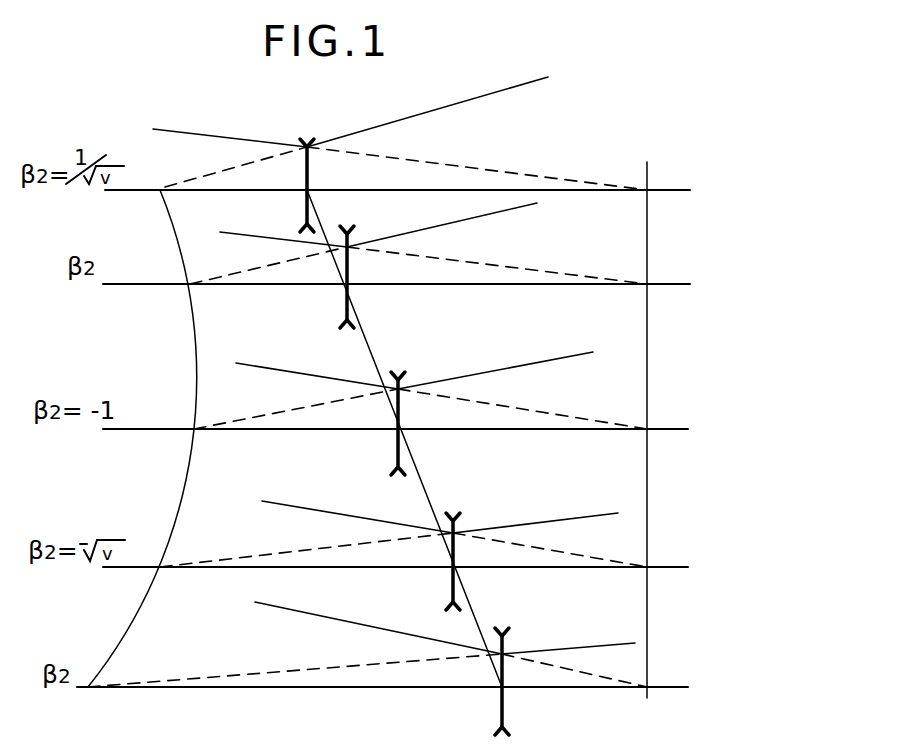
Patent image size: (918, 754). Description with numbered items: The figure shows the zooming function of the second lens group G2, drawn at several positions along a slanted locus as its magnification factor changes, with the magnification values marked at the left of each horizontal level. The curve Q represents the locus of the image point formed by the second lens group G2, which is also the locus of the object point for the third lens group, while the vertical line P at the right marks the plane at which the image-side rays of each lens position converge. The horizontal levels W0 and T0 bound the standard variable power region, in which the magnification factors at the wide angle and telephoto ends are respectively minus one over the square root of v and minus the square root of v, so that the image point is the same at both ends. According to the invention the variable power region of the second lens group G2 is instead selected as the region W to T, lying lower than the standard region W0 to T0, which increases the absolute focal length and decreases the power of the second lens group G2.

The second lens group G2 is at (304, 137).
The locus of the image point formed by the second lens group Q is at (142, 422).
The image plane P is at (647, 414).
The wide angle end of the standard variable power region W0 is at (419, 192).
The wide angle end of the selected variable power region W is at (413, 285).
The telephoto end of the standard variable power region T0 is at (414, 569).
The telephoto end of the selected variable power region T is at (396, 688).